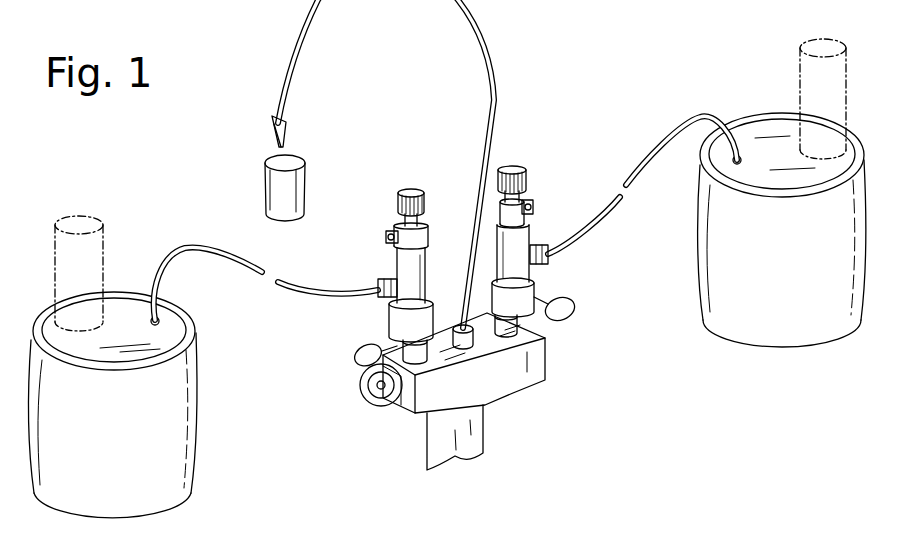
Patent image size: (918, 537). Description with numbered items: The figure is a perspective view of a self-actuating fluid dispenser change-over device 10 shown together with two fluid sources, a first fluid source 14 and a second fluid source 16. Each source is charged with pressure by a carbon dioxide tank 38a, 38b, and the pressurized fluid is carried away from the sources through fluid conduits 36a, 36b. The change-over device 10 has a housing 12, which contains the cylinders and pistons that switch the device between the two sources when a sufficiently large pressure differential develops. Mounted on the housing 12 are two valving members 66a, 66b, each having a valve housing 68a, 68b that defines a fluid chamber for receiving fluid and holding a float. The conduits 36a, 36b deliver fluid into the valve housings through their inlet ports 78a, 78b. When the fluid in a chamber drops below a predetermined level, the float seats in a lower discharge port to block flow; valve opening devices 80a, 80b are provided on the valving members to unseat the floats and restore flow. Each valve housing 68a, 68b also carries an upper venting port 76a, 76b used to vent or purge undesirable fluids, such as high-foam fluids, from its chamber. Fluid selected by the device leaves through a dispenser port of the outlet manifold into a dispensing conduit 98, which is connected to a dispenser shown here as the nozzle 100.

The self-actuating fluid dispenser change-over device 10 is at (629, 43).
The housing 12 is at (545, 357).
The first fluid source 14 is at (182, 404).
The second fluid source 16 is at (720, 215).
The fluid conduit 36a is at (190, 246).
The fluid conduit 36b is at (650, 147).
The carbon dioxide tank 38a is at (75, 224).
The carbon dioxide tank 38b is at (808, 70).
The valving member 66a is at (381, 170).
The valving member 66b is at (521, 156).
The valve housing 68a is at (433, 264).
The valve housing 68b is at (523, 236).
The upper venting port 76a is at (382, 240).
The upper venting port 76b is at (535, 196).
The inlet port 78a is at (360, 284).
The inlet port 78b is at (557, 257).
The valve opening device 80a is at (348, 356).
The valve opening device 80b is at (571, 292).
The dispensing conduit 98 is at (494, 31).
The nozzle 100 is at (272, 120).